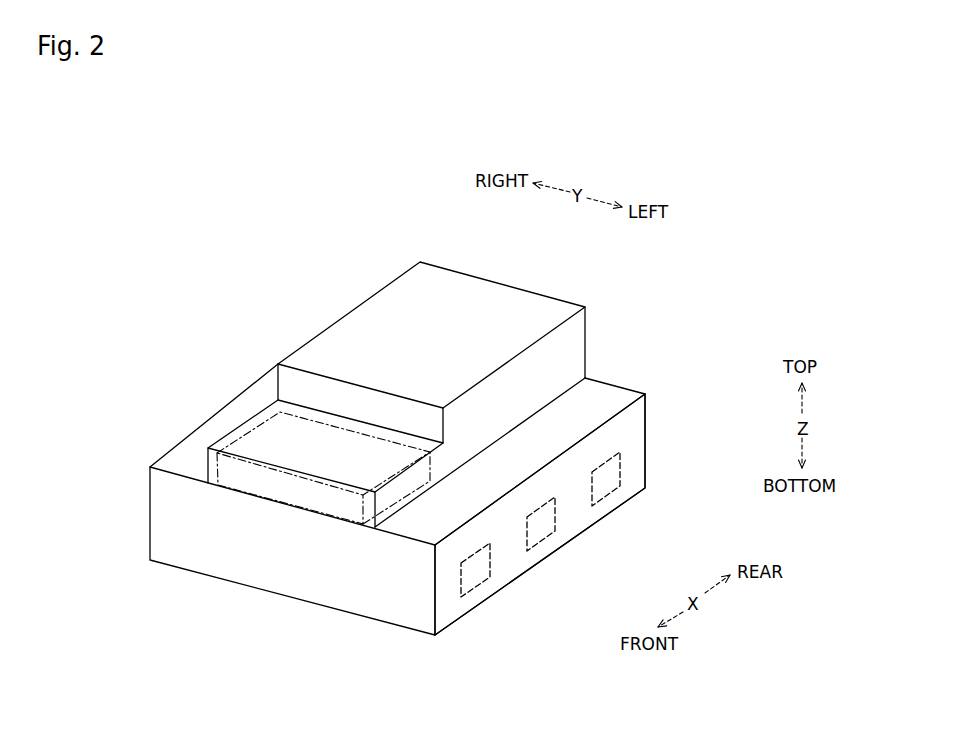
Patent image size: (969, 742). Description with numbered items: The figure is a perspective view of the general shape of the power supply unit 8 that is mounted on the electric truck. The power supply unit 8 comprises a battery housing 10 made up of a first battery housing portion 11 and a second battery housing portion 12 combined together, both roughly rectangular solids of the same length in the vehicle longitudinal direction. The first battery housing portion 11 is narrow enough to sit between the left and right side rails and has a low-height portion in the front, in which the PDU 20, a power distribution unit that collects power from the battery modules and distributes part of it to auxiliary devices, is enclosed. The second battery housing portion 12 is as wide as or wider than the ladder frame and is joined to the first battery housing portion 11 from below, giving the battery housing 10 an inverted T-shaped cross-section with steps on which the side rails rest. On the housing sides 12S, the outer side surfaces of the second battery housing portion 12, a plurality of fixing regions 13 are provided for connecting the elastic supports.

The power supply unit 8 is at (247, 272).
The battery housing 10 is at (712, 324).
The first battery housing portion 11 is at (567, 346).
The second battery housing portion 12 is at (635, 422).
The housing side 12S is at (637, 462).
The fixing region 13 is at (475, 573).
The PDU 20 is at (278, 450).